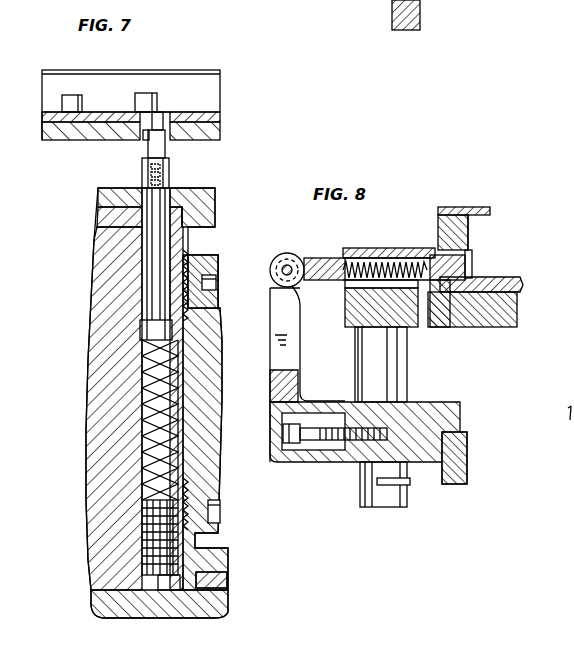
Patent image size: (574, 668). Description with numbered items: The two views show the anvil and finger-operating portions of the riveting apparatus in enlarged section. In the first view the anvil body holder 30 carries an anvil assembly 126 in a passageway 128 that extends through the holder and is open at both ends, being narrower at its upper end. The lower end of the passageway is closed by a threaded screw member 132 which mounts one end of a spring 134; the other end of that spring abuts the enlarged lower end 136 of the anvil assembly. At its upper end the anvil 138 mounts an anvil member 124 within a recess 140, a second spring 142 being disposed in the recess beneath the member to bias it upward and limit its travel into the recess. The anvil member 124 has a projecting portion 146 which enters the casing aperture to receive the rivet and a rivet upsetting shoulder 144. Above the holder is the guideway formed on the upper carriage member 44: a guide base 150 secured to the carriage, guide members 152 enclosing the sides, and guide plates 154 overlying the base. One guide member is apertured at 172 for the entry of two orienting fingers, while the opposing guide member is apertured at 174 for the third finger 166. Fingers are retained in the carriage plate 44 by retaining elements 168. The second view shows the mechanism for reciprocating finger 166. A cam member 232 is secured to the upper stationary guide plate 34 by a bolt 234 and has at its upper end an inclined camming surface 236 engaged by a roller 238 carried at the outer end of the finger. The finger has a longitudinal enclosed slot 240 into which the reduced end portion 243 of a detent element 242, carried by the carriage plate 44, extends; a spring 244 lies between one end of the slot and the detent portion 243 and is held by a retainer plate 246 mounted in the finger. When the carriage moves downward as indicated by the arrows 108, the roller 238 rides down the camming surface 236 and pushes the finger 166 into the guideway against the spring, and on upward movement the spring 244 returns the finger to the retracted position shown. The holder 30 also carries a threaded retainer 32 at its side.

In FIG. 7, the anvil body holder 30 is at (119, 433).
In FIG. 7, the threaded retainer 32 is at (205, 255).
In FIG. 8, the upper stationary guide plate 34 is at (430, 402).
In FIG. 8, the upper carriage member 44 is at (480, 316).
In FIG. 8, the arrows 108 is at (346, 355).
In FIG. 7, the anvil member 124 is at (172, 155).
In FIG. 7, the anvil assembly 126 is at (104, 272).
In FIG. 7, the passageway 128 is at (145, 390).
In FIG. 7, the screw member 132 is at (160, 580).
In FIG. 7, the spring 134 is at (146, 466).
In FIG. 7, the lower end of the anvil assembly 136 is at (140, 332).
In FIG. 7, the anvil 138 is at (148, 231).
In FIG. 7, the recess 140 is at (142, 180).
In FIG. 7, the spring 142 is at (170, 181).
In FIG. 7, the rivet upsetting shoulder 144 is at (143, 139).
In FIG. 7, the projecting portion 146 is at (160, 116).
In FIG. 8, the guide base 150 is at (510, 277).
In FIG. 7, the guide member 152 is at (178, 80).
In FIG. 8, the guide member 152 is at (468, 220).
In FIG. 7, the guide plate 154 is at (76, 70).
In FIG. 8, the guide plate 154 is at (466, 207).
In FIG. 8, the finger 166 is at (315, 253).
In FIG. 8, the retaining element 168 is at (420, 258).
In FIG. 7, the aperture 172 is at (135, 101).
In FIG. 8, the aperture 174 is at (472, 264).
In FIG. 8, the cam member 232 is at (268, 357).
In FIG. 8, the bolt 234 is at (282, 453).
In FIG. 8, the inclined camming surface 236 is at (293, 298).
In FIG. 8, the roller 238 is at (278, 256).
In FIG. 8, the enclosed slot 240 is at (375, 285).
In FIG. 8, the detent element 242 is at (418, 307).
In FIG. 8, the reduced end portion 243 is at (468, 251).
In FIG. 8, the spring 244 is at (375, 256).
In FIG. 8, the retainer plate 246 is at (343, 262).